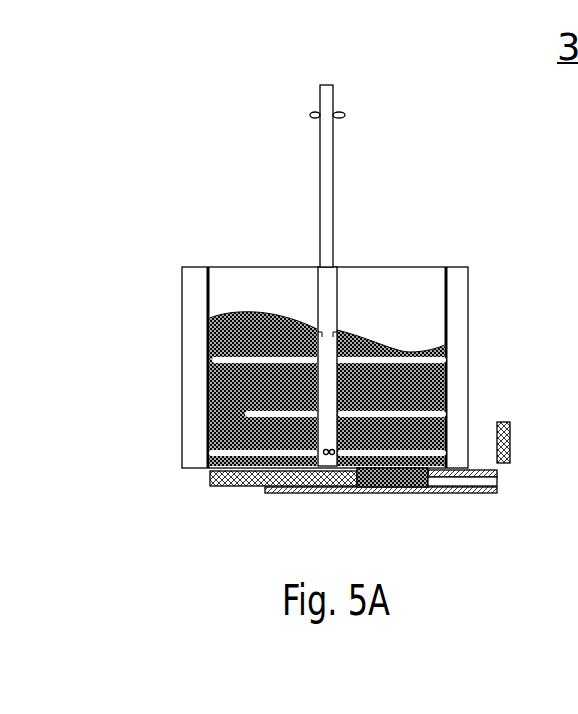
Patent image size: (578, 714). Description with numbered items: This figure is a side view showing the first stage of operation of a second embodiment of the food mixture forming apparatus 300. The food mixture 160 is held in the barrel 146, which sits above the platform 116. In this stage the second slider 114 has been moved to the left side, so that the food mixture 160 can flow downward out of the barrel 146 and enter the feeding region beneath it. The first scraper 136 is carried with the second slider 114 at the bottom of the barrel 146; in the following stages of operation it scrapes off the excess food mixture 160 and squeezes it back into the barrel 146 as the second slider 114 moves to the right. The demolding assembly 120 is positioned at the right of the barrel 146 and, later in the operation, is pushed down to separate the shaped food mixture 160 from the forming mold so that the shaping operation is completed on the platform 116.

The food mixture forming apparatus 300 is at (212, 63).
The food mixture 160 is at (210, 318).
The barrel 146 is at (193, 397).
The second slider 114 is at (210, 477).
The demolding assembly 120 is at (508, 423).
The platform 116 is at (438, 492).
The first scraper 136 is at (462, 492).